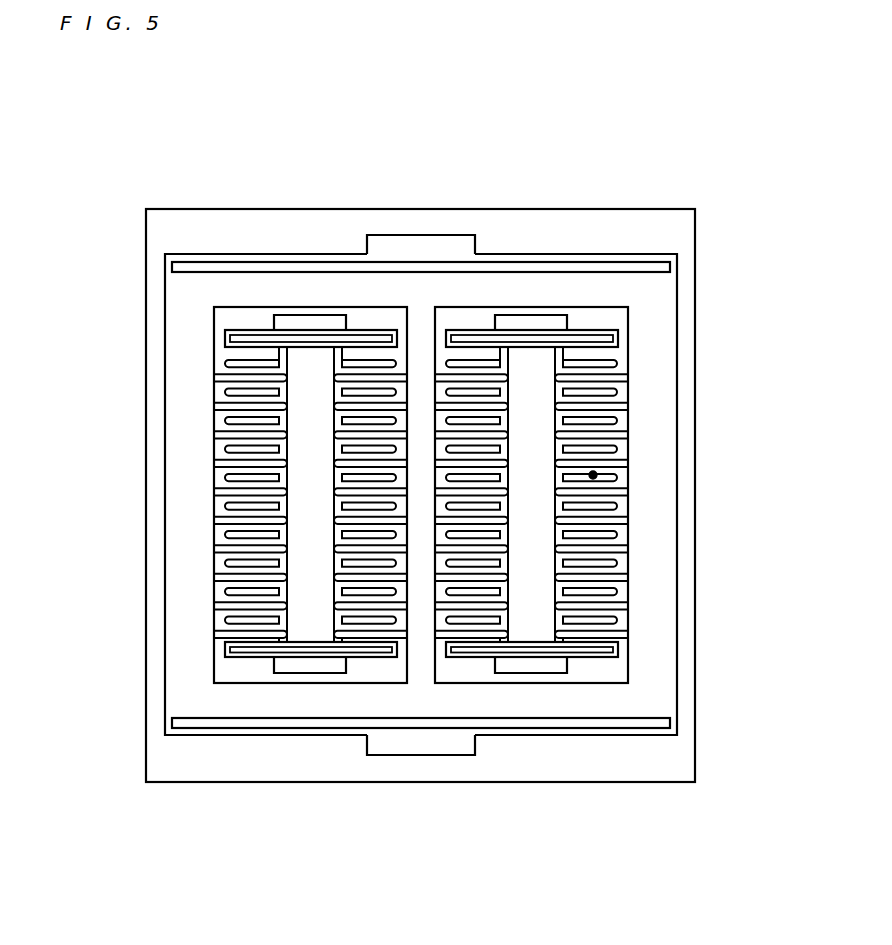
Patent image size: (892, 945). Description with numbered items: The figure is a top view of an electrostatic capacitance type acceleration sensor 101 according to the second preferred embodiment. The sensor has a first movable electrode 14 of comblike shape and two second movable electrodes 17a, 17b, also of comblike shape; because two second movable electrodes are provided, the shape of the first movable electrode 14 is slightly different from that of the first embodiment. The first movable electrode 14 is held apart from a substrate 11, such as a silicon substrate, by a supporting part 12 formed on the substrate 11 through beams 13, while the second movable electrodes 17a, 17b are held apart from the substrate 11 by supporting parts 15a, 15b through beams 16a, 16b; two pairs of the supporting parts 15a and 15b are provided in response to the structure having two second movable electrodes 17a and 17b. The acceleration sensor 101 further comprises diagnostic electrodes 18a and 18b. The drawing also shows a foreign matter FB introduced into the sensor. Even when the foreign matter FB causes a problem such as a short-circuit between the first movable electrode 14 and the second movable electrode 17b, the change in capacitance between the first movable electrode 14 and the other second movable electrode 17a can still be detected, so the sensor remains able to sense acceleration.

The electrostatic capacitance type acceleration sensor 101 is at (438, 127).
The substrate 11 is at (173, 232).
The supporting part 12 is at (416, 243).
The beam 13 is at (247, 254).
The first movable electrode 14 is at (657, 543).
The supporting part 15a is at (290, 324).
The supporting part 15b is at (553, 324).
The beam 16a is at (232, 327).
The beam 16b is at (605, 327).
The second movable electrode 17a is at (312, 527).
The second movable electrode 17b is at (535, 507).
The diagnostic electrode 18a is at (370, 363).
The diagnostic electrode 18b is at (470, 363).
The foreign matter FB is at (600, 474).